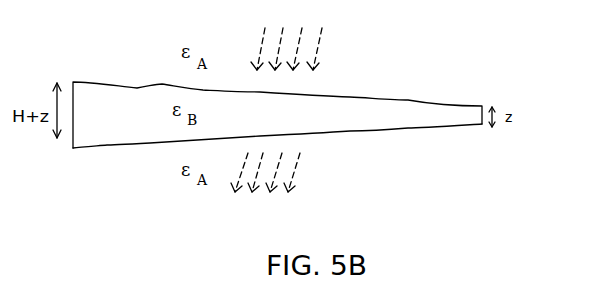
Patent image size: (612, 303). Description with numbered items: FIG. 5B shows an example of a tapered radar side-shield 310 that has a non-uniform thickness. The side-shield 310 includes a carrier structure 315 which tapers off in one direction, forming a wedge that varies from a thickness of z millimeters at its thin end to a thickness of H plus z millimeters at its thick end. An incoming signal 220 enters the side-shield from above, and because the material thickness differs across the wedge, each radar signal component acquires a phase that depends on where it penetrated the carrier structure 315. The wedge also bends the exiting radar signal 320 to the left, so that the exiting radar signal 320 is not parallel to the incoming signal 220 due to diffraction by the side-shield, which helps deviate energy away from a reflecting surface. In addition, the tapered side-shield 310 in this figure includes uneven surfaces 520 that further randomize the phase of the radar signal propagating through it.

The side-shield 310 is at (410, 53).
The carrier structure 315 is at (277, 136).
The uneven surfaces 520 is at (360, 132).
The incoming signal 220 is at (286, 40).
The exiting radar signal 320 is at (265, 189).